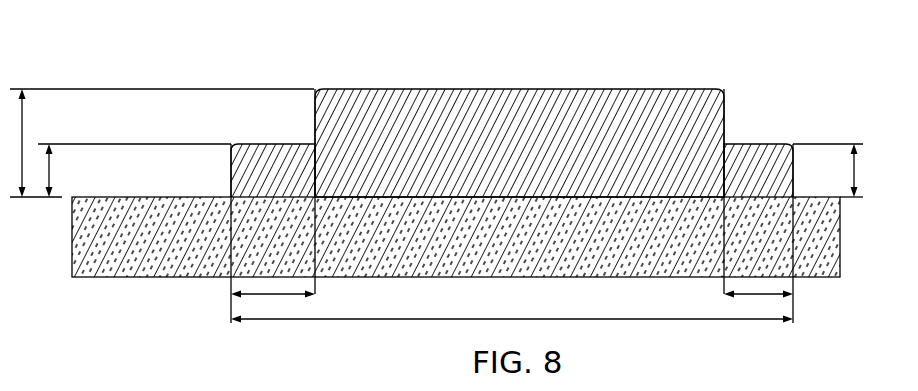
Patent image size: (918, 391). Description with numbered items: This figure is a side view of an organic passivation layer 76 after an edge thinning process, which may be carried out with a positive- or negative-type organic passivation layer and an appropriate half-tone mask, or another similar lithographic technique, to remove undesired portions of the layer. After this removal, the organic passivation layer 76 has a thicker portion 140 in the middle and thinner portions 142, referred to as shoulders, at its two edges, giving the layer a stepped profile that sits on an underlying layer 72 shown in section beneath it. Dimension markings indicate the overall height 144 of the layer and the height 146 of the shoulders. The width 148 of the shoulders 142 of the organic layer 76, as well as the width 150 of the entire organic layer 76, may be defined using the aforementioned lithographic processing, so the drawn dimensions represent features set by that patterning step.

The organic passivation layer 76 is at (163, 47).
The base substrate 72 is at (517, 278).
The thicker portion 140 is at (466, 89).
The thinner portions 142 is at (290, 143).
The overall height 144 is at (27, 119).
The step height 146 is at (54, 170).
The width of the shoulders 148 is at (282, 297).
The width of the entire organic layer 150 is at (597, 321).